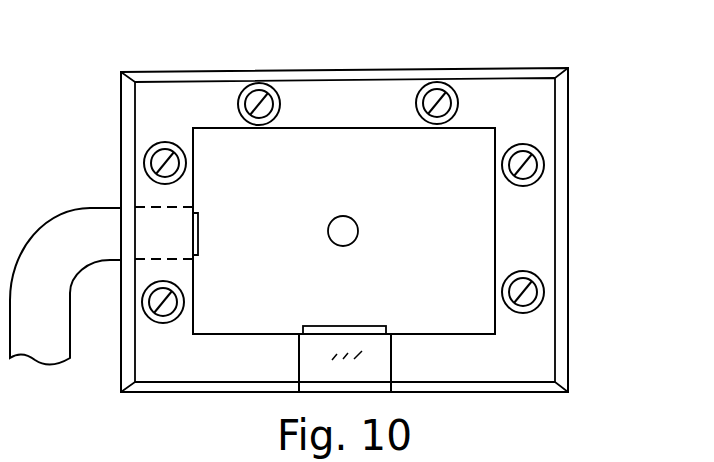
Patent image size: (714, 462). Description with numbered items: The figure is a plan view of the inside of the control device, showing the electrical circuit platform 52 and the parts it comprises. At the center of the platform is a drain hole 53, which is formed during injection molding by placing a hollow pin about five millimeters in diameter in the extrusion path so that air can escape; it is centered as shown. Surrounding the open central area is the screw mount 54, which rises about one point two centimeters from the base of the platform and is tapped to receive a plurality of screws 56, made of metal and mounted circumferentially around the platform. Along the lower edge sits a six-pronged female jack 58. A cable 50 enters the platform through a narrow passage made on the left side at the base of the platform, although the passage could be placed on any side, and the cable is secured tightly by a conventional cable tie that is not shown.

The cable 50 is at (77, 237).
The electrical circuit platform 52 is at (193, 77).
The drain hole 53 is at (340, 224).
The screw mount 54 is at (488, 95).
The screws 56 is at (515, 164).
The six-pronged female jack 58 is at (321, 343).